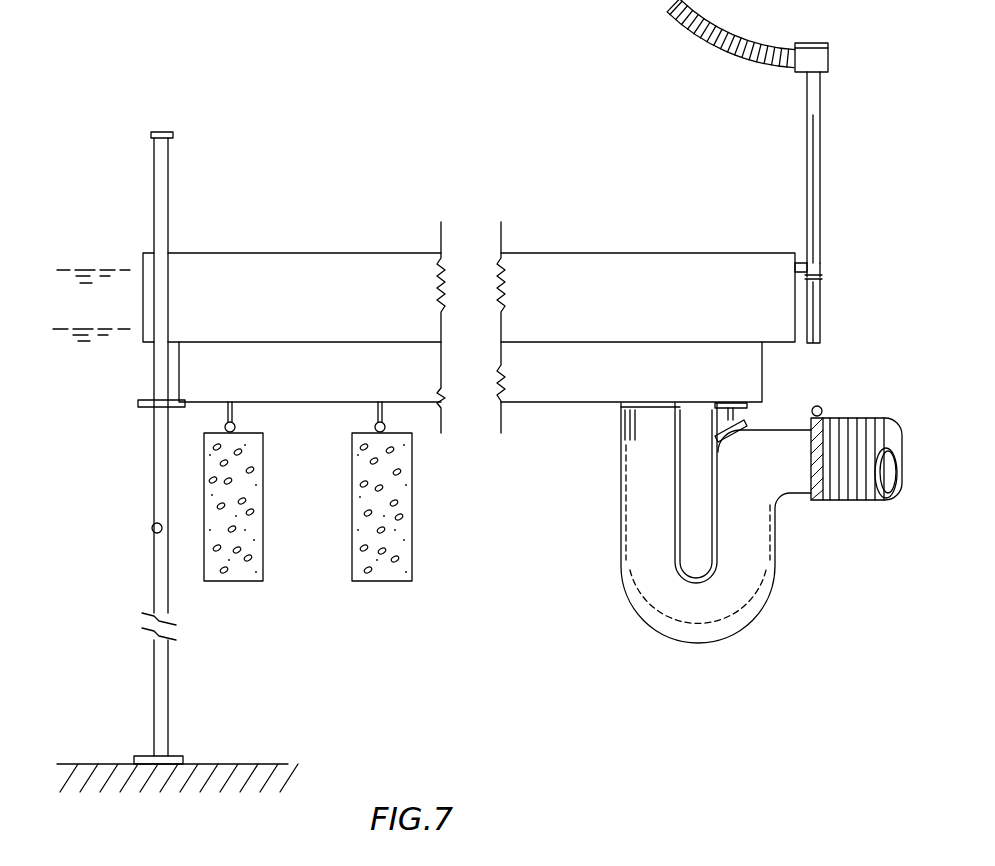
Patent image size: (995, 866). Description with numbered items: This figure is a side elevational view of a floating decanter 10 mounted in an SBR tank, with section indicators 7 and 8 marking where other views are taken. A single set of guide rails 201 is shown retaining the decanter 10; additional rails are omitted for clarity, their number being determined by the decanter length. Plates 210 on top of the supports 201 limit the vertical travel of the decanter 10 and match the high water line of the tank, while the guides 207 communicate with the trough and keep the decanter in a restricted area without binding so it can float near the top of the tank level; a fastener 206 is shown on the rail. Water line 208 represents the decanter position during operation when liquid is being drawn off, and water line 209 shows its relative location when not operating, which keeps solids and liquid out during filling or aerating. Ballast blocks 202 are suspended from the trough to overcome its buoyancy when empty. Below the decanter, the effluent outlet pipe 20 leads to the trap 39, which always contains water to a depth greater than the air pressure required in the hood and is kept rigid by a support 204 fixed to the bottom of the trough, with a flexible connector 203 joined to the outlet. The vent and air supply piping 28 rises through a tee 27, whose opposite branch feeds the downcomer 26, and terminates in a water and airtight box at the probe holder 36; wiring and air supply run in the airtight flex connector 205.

The section line 7- 7 is at (89, 113).
The section line 8- 8 is at (313, 250).
The floating decanter 10 is at (647, 248).
The effluent outlet pipe 20 is at (613, 410).
The downcomer 26 is at (820, 328).
The tee 27 is at (820, 277).
The air vent pipe 28 is at (819, 218).
The probe holder 36 is at (828, 63).
The trap 39 is at (733, 490).
The guide rails 201 is at (175, 451).
The ballast blocks 202 is at (352, 476).
The flexible connector 203 is at (836, 420).
The support 204 is at (733, 418).
The airtight flex connector 205 is at (733, 55).
The post fastener ring 206 is at (152, 528).
The guides 207 is at (138, 403).
The water line 208 is at (102, 269).
The water line 209 is at (120, 329).
The plates 210 is at (166, 132).